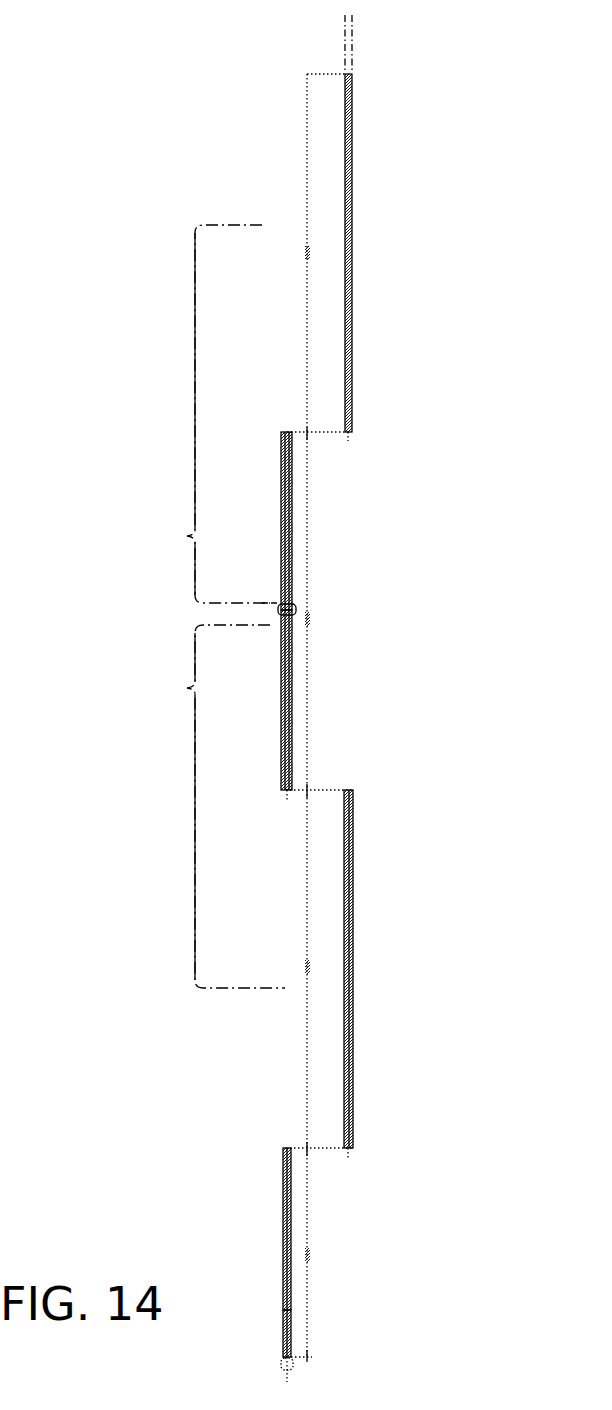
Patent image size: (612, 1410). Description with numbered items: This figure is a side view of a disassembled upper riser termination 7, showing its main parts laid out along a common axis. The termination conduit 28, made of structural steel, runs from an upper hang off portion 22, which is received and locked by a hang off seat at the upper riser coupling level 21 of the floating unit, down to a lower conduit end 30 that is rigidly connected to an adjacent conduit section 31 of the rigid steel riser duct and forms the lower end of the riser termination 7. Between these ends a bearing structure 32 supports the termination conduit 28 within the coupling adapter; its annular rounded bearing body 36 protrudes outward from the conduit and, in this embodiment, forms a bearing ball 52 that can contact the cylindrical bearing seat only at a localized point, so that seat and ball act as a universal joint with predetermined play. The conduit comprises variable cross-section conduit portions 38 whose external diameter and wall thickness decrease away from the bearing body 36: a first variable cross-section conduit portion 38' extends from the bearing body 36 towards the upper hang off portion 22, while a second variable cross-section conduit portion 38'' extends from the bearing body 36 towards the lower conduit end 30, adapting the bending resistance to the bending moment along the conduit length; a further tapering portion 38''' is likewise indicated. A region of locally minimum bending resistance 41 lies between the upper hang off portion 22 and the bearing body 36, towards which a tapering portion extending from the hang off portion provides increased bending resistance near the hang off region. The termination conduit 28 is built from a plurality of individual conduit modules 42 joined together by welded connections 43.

The upper riser termination 7 is at (298, 175).
The upper riser coupling level 21 is at (280, 1358).
The upper hang off portion 22 is at (295, 1368).
The termination conduit 28 is at (362, 1007).
The lower conduit end 30 is at (353, 75).
The adjacent conduit section 31 is at (345, 22).
The bearing structure 32 is at (0, 805).
The bearing body 36 is at (296, 613).
The variable cross-section conduit portion 38 is at (211, 606).
The first variable cross-section conduit portion 38' is at (255, 700).
The second variable cross-section conduit portion 38'' is at (256, 521).
The third segment portion 38''' is at (245, 1317).
The region of locally minimum bending resistance 41 is at (279, 1292).
The conduit module 42 is at (321, 715).
The welded connection 43 is at (287, 428).
The bearing ball 52 is at (278, 608).